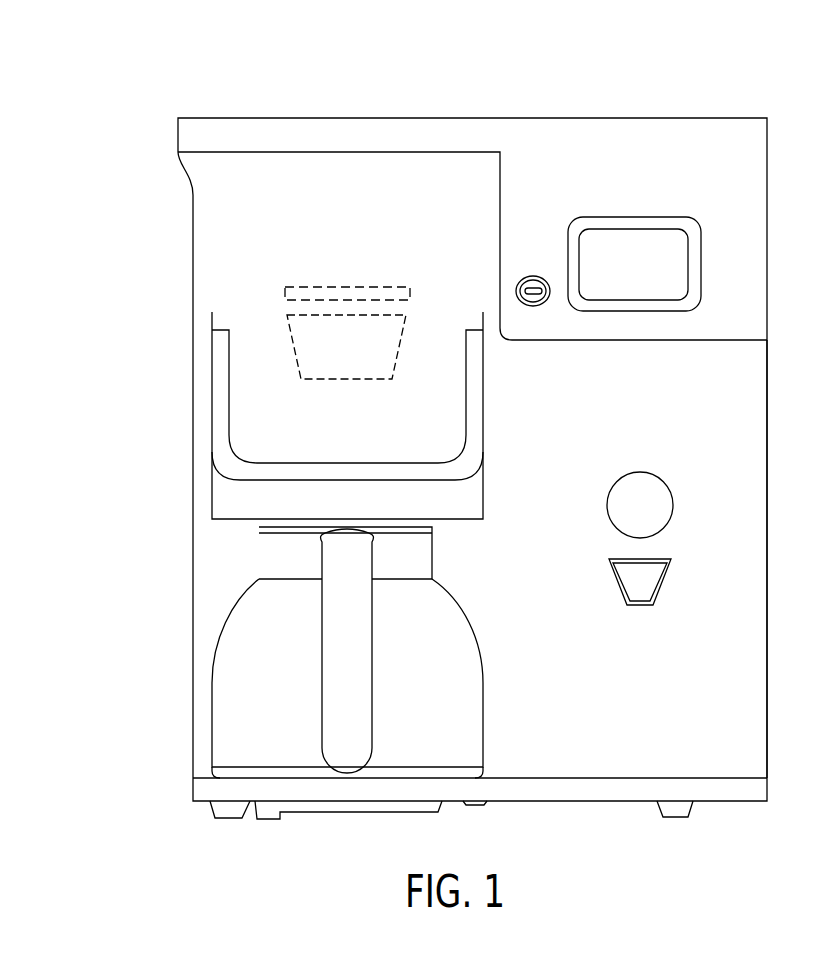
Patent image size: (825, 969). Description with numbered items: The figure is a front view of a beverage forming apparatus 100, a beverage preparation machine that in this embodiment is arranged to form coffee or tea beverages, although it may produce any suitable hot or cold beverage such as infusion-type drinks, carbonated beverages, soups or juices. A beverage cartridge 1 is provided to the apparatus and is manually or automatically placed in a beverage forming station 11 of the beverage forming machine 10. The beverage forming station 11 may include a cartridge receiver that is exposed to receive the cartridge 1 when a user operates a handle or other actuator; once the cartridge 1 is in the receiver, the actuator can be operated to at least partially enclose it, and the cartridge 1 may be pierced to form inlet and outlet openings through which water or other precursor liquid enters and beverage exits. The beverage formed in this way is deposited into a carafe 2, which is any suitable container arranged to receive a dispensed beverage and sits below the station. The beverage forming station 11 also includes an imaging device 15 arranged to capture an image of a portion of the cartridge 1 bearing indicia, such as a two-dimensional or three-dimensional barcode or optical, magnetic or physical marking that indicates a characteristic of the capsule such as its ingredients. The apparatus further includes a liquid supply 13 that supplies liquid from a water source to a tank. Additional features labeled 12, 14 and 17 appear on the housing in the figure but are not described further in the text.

The beverage forming apparatus 100 is at (148, 106).
The beverage forming machine 10 is at (745, 193).
The beverage forming station 11 is at (224, 271).
The base 12 is at (236, 788).
The liquid supply 13 is at (257, 510).
The display 14 is at (640, 285).
The imaging device 15 is at (410, 293).
The side wall 17 is at (757, 590).
The beverage cartridge 1 is at (297, 352).
The carafe 2 is at (256, 641).